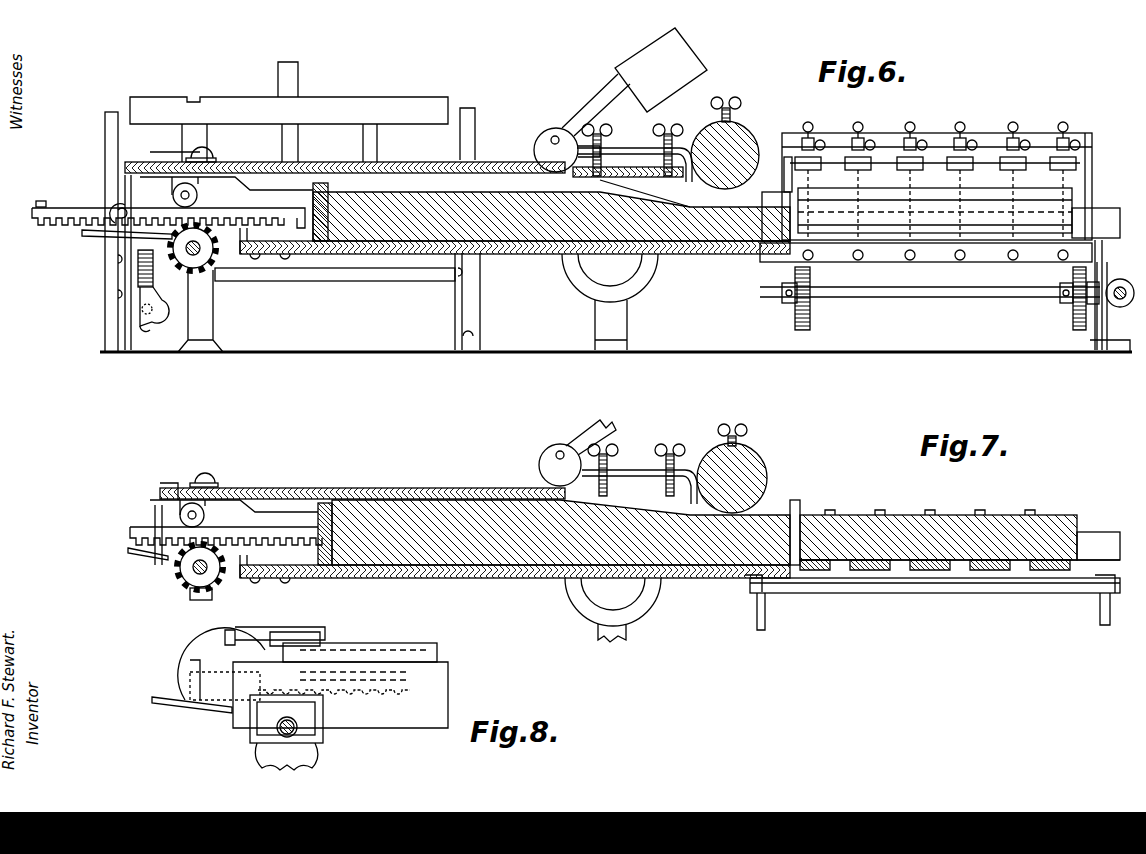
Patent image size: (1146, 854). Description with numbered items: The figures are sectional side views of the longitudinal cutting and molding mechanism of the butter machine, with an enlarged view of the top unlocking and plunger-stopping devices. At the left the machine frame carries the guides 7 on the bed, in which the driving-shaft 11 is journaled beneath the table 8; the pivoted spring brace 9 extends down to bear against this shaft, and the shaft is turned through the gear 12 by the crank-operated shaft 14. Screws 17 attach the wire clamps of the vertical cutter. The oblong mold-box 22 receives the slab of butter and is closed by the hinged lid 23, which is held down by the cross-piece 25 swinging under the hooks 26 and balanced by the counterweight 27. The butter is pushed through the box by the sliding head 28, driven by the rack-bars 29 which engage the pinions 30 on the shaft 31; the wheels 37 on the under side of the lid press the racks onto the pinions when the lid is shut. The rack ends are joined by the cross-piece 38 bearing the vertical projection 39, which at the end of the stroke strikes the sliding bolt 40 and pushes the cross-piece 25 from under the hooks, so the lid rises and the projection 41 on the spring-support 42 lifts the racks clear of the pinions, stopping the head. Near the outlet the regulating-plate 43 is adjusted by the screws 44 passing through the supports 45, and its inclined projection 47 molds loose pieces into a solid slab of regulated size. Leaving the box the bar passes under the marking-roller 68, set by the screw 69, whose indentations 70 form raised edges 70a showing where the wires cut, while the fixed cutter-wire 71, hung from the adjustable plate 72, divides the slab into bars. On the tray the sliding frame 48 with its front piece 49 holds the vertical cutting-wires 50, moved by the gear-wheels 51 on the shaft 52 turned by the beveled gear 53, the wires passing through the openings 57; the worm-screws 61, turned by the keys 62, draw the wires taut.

In FIG. 6, the guides 7 is at (108, 320).
In FIG. 6, the table 8 is at (345, 100).
In FIG. 6, the spring brace 9 is at (284, 90).
In FIG. 6, the driving-shaft 11 is at (350, 278).
In FIG. 6, the gear 12 is at (135, 272).
In FIG. 6, the shaft 14 is at (157, 316).
In FIG. 6, the screws 17 is at (155, 312).
In FIG. 8, the mold-box 22 is at (340, 695).
In FIG. 6, the lid 23 is at (324, 164).
In FIG. 7, the lid 23 is at (386, 484).
In FIG. 8, the lid 23 is at (410, 650).
In FIG. 6, the cross-piece 25 is at (196, 156).
In FIG. 7, the cross-piece 25 is at (204, 476).
In FIG. 8, the cross-piece 25 is at (316, 638).
In FIG. 6, the hooks 26 is at (254, 152).
In FIG. 7, the hooks 26 is at (240, 483).
In FIG. 8, the hooks 26 is at (282, 648).
In FIG. 6, the counterweight 27 is at (626, 66).
In FIG. 6, the sliding head 28 is at (312, 232).
In FIG. 7, the sliding head 28 is at (317, 556).
In FIG. 6, the rack-bars 29 is at (168, 225).
In FIG. 7, the rack-bars 29 is at (134, 533).
In FIG. 8, the rack-bars 29 is at (190, 690).
In FIG. 6, the pinions 30 is at (189, 263).
In FIG. 7, the pinions 30 is at (186, 576).
In FIG. 8, the pinions 30 is at (320, 726).
In FIG. 6, the shaft 31 is at (199, 264).
In FIG. 7, the shaft 31 is at (205, 574).
In FIG. 8, the shaft 31 is at (280, 734).
In FIG. 6, the wheels 37 is at (175, 192).
In FIG. 7, the wheels 37 is at (182, 512).
In FIG. 8, the cross-piece 38 is at (190, 672).
In FIG. 8, the vertical projection 39 is at (216, 652).
In FIG. 8, the sliding bolt 40 is at (250, 624).
In FIG. 6, the projection 41 is at (112, 212).
In FIG. 6, the spring-support 42 is at (115, 238).
In FIG. 6, the regulating-plate 43 is at (634, 165).
In FIG. 7, the regulating-plate 43 is at (639, 487).
In FIG. 6, the screws 44 is at (590, 128).
In FIG. 7, the screws 44 is at (612, 462).
In FIG. 6, the supports 45 is at (640, 150).
In FIG. 7, the supports 45 is at (636, 470).
In FIG. 6, the inclined projection 47 is at (551, 210).
In FIG. 7, the inclined projection 47 is at (561, 532).
In FIG. 6, the sliding frame 48 is at (1090, 206).
In FIG. 6, the front piece of frame 49 is at (932, 132).
In FIG. 6, the vertical cutting-wires 50 is at (845, 268).
In FIG. 6, the gear-wheels 51 is at (812, 316).
In FIG. 6, the shaft 52 is at (934, 298).
In FIG. 6, the beveled gear 53 is at (1112, 307).
In FIG. 7, the openings 57 is at (838, 580).
In FIG. 6, the worm-screws 61 is at (840, 134).
In FIG. 6, the keys 62 is at (864, 124).
In FIG. 6, the marking-roller 68 is at (735, 141).
In FIG. 7, the marking-roller 68 is at (760, 462).
In FIG. 6, the screw 69 is at (742, 100).
In FIG. 7, the screw 69 is at (718, 430).
In FIG. 7, the indentations 70 is at (794, 500).
In FIG. 7, the raised edges 70a is at (838, 512).
In FIG. 6, the fixed cutter-wire 71 is at (745, 245).
In FIG. 7, the fixed cutter-wire 71 is at (817, 495).
In FIG. 6, the adjustable plate 72 is at (788, 156).
In FIG. 7, the adjustable plate 72 is at (820, 506).